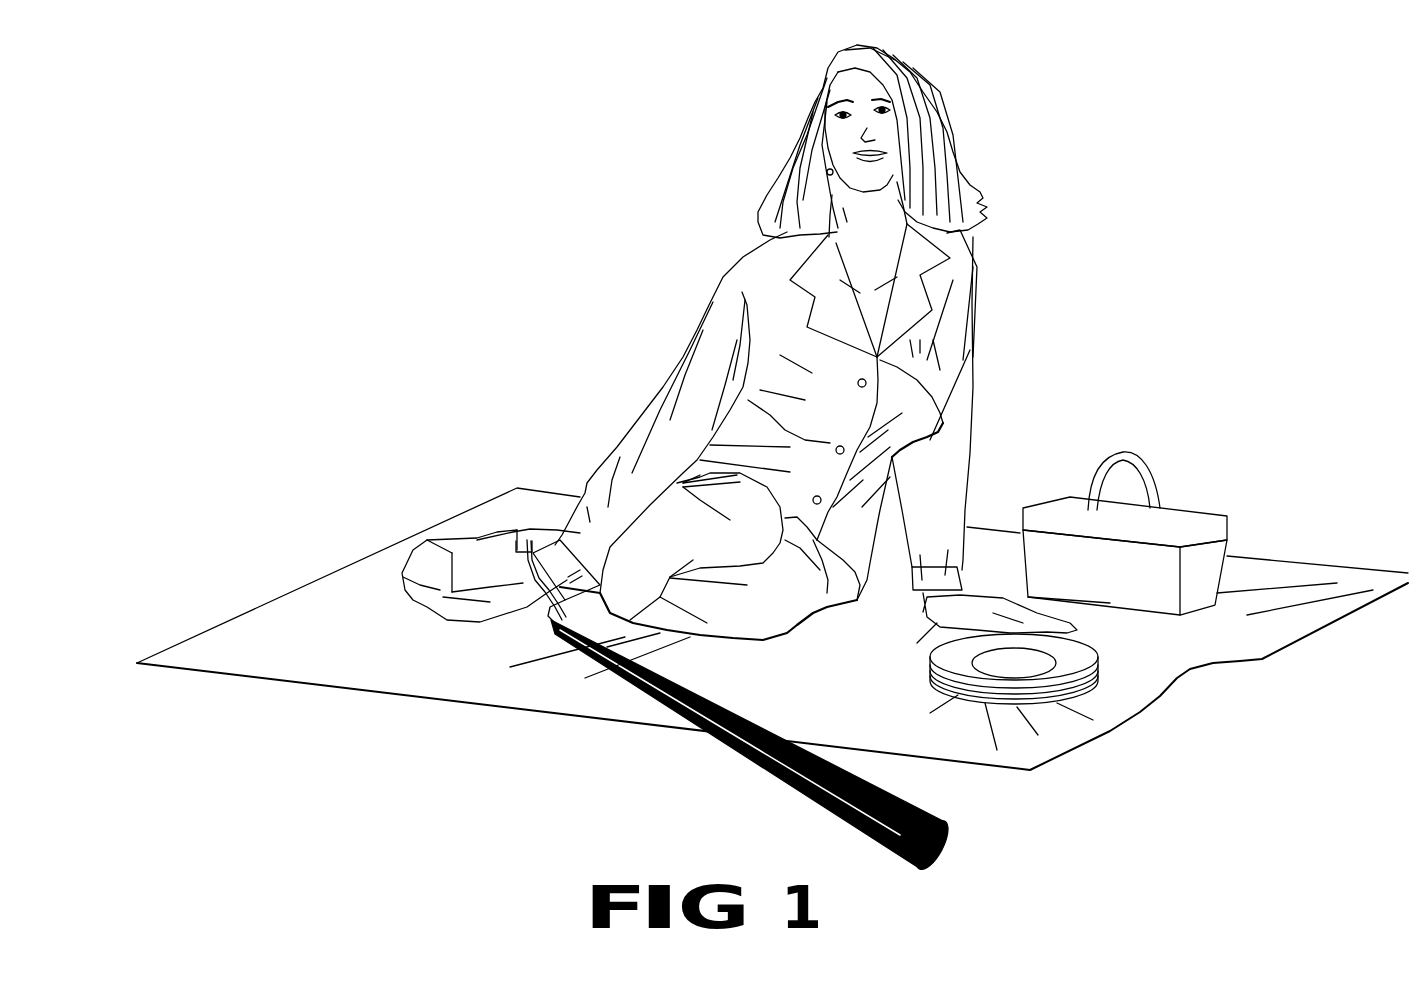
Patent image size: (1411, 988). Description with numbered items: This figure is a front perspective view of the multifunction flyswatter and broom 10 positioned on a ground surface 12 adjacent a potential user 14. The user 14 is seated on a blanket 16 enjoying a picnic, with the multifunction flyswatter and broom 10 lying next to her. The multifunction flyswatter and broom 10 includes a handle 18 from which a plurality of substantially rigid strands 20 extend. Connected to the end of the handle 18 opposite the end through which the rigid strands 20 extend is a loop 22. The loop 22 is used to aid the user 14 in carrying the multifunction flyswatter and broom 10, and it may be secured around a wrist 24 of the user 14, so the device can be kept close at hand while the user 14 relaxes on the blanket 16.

The multifunction flyswatter and broom 10 is at (708, 783).
The ground surface 12 is at (410, 702).
The user 14 is at (638, 311).
The blanket 16 is at (316, 603).
The handle 18 is at (582, 658).
The substantially rigid strands 20 is at (740, 713).
The loop 22 is at (547, 613).
The wrist 24 is at (527, 540).